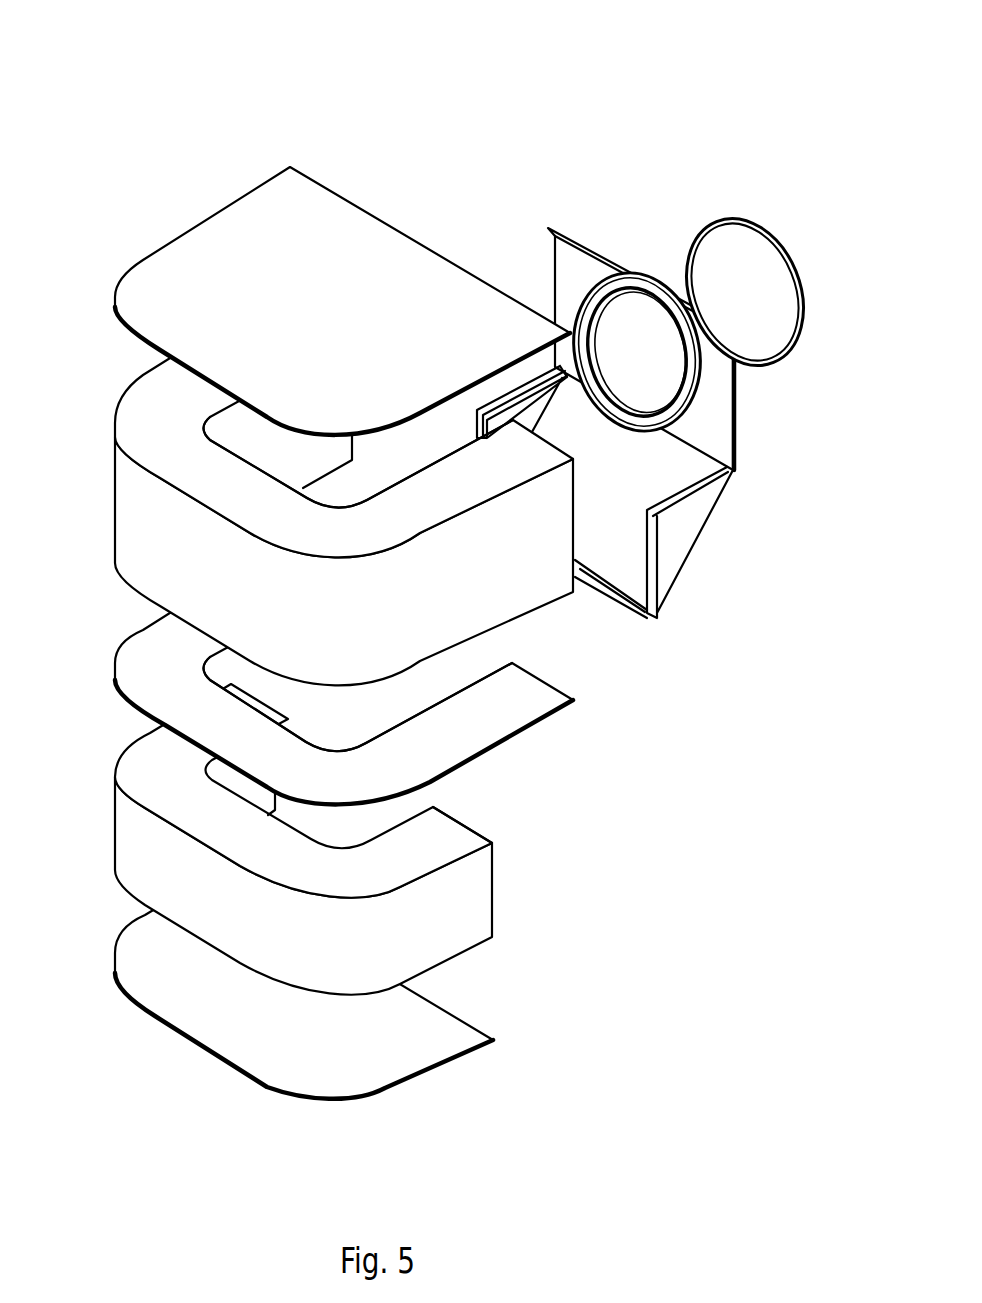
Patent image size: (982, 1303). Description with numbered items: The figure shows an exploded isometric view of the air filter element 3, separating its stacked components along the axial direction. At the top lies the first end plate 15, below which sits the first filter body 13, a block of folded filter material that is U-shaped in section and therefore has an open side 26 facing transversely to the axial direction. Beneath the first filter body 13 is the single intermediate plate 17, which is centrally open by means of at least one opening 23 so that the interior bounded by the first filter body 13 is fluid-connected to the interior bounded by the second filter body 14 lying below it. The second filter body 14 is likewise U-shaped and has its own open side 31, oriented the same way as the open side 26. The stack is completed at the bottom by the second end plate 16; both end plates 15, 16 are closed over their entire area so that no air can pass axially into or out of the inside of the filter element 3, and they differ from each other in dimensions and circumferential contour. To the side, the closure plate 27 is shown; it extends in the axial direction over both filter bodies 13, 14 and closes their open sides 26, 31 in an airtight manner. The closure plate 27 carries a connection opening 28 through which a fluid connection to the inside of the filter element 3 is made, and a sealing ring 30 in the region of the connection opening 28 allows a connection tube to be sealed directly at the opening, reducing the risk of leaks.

The air filter element 3 is at (650, 172).
The first filter body 13 is at (244, 595).
The second filter body 14 is at (246, 923).
The first end plate 15 is at (352, 316).
The second end plate 16 is at (308, 1050).
The intermediate plate 17 is at (248, 745).
The opening 23 is at (460, 687).
The open side 26 is at (352, 440).
The closure plate 27 is at (753, 425).
The connection opening 28 is at (623, 410).
The sealing ring 30 is at (789, 265).
The open side 31 is at (463, 824).